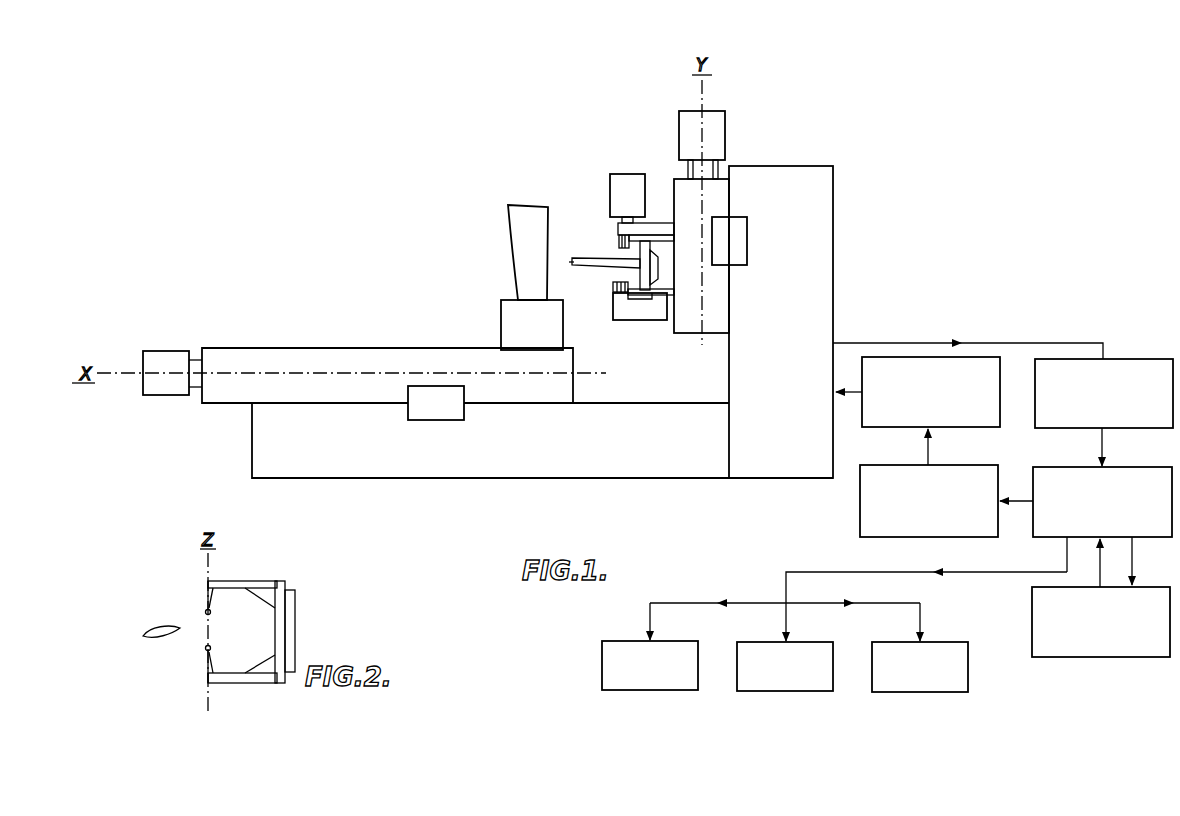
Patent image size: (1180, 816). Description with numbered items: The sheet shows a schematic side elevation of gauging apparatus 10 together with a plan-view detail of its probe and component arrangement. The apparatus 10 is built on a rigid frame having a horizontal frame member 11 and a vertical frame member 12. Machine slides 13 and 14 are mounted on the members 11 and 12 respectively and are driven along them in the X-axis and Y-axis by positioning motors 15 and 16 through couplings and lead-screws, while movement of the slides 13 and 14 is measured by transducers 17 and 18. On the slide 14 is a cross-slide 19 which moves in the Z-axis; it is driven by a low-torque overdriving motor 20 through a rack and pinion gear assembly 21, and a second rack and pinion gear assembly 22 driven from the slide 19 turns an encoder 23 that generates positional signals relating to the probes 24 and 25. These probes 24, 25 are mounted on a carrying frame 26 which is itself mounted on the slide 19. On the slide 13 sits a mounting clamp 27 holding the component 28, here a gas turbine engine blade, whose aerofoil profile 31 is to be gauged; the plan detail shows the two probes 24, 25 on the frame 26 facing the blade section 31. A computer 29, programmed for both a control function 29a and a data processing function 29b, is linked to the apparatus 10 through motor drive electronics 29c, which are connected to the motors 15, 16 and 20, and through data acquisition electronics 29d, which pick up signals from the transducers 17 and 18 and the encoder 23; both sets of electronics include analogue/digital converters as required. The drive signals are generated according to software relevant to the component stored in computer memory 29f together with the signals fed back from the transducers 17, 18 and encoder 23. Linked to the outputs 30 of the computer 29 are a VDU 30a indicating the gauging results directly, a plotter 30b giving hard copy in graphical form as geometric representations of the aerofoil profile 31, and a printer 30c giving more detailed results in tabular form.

In FIG. 1, the gauging apparatus 10 is at (912, 144).
In FIG. 1, the horizontal frame member 11 is at (620, 458).
In FIG. 1, the vertical frame member 12 is at (823, 213).
In FIG. 1, the machine slide 13 is at (337, 352).
In FIG. 1, the machine slide 14 is at (713, 300).
In FIG. 1, the positioning motor 15 is at (167, 382).
In FIG. 1, the positioning motor 16 is at (717, 135).
In FIG. 1, the transducer 17 is at (438, 408).
In FIG. 1, the transducer 18 is at (737, 243).
In FIG. 1, the cross-slide 19 is at (655, 270).
In FIG. 2, the cross-slide 19 is at (292, 610).
In FIG. 1, the low-torque overdriving motor 20 is at (627, 186).
In FIG. 1, the rack and pinion gear assembly 21 is at (617, 240).
In FIG. 1, the rack and pinion gear assembly 22 is at (613, 284).
In FIG. 1, the encoder 23 is at (645, 311).
In FIG. 1, the probe 24 is at (569, 262).
In FIG. 2, the probe 24 is at (206, 649).
In FIG. 1, the probe 25 is at (558, 213).
In FIG. 2, the probe 25 is at (206, 611).
In FIG. 1, the carrying frame 26 is at (592, 257).
In FIG. 2, the carrying frame 26 is at (242, 680).
In FIG. 1, the mounting clamp 27 is at (515, 317).
In FIG. 1, the component 28 is at (520, 225).
In FIG. 2, the component 28 is at (147, 643).
In FIG. 1, the computer 29 is at (1082, 331).
In FIG. 1, the control function 29a is at (957, 537).
In FIG. 1, the data processing function 29b is at (1140, 537).
In FIG. 1, the motor drive electronics 29c is at (963, 427).
In FIG. 1, the data acquisition electronics 29d is at (1130, 428).
In FIG. 1, the computer memory 29f is at (1125, 657).
In FIG. 1, the outputs 30 is at (680, 592).
In FIG. 1, the VDU 30a is at (665, 690).
In FIG. 1, the plotter 30b is at (800, 691).
In FIG. 1, the printer 30c is at (940, 692).
In FIG. 2, the aerofoil profile 31 is at (162, 628).